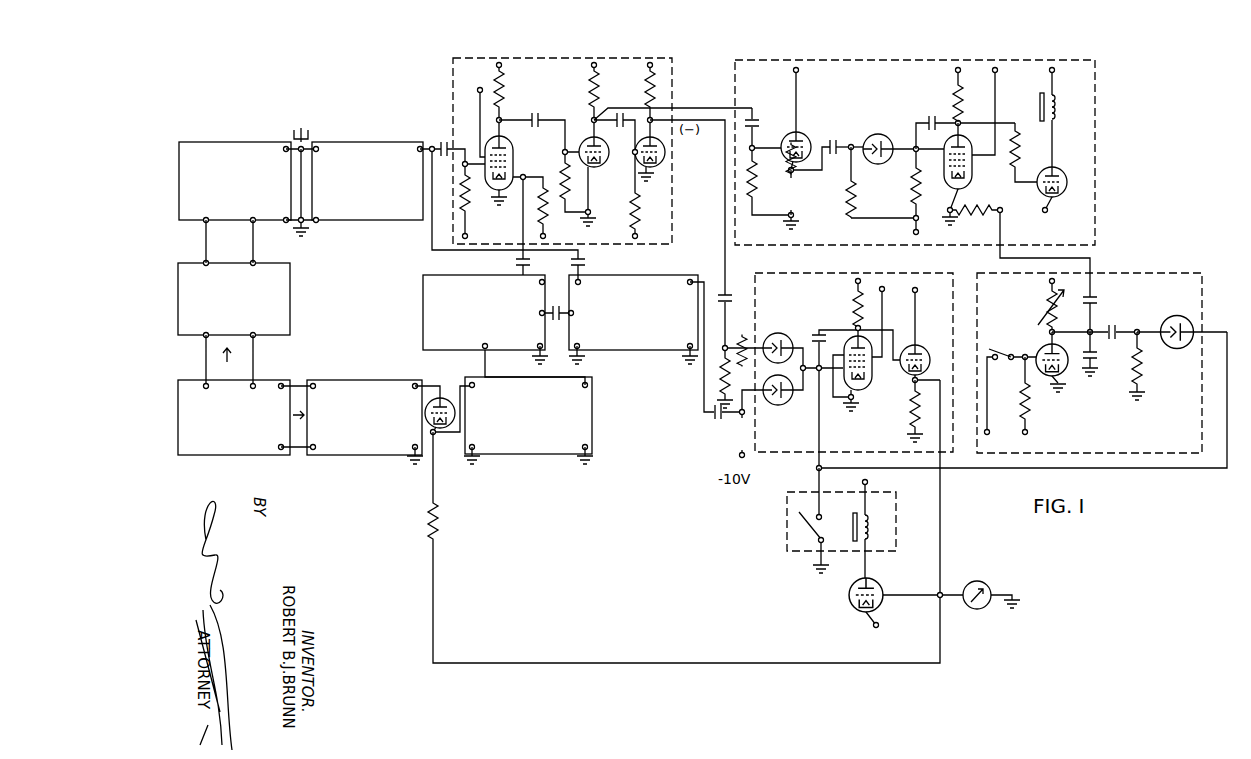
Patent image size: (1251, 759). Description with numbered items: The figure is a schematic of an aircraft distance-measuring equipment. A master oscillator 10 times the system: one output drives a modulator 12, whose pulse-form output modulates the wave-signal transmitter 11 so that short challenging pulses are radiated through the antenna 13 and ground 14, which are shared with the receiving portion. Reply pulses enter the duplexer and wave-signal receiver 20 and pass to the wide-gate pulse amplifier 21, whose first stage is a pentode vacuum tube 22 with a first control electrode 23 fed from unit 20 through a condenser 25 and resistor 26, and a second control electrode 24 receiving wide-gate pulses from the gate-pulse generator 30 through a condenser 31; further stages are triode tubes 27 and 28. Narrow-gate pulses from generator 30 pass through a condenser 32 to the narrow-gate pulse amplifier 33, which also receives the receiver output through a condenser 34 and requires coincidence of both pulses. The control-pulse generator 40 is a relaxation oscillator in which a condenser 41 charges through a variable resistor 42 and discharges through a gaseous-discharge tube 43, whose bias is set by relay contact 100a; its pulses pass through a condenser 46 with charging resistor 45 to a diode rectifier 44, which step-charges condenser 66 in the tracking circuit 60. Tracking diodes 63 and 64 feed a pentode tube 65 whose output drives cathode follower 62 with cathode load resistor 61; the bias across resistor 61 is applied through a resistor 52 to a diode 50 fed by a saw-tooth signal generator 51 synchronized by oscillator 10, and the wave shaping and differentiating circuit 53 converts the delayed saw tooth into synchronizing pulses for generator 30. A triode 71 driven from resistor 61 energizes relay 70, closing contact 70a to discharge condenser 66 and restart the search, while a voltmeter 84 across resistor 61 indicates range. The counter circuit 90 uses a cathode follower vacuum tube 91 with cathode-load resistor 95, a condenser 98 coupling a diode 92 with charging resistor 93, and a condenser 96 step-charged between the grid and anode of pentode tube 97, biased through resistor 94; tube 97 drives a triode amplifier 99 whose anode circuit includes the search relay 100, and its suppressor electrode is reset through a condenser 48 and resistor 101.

The master oscillator 10 is at (282, 380).
The wave-signal transmitter 11 is at (244, 124).
The modulator 12 is at (262, 263).
The antenna 13 is at (301, 126).
The ground 14 is at (312, 228).
The duplexer and wave-signal receiver 20 is at (384, 142).
The wide-gate pulse amplifier 21 is at (452, 80).
The vacuum tube 22 is at (509, 143).
The first control electrode 23 is at (492, 184).
The second control electrode 24 is at (514, 152).
The condenser 25 is at (442, 138).
The resistor 26 is at (470, 214).
The triode tube 27 is at (580, 138).
The triode tube 28 is at (647, 174).
The gate-pulse generator 30 is at (423, 311).
The condenser 31 is at (513, 259).
The condenser 32 is at (552, 300).
The narrow-gate pulse amplifier 33 is at (644, 350).
The condenser 34 is at (587, 260).
The control-pulse generator 40 is at (1166, 274).
The condenser 41 is at (1102, 364).
The resistor 42 is at (1042, 294).
The gaseous-discharge tube 43 is at (1038, 344).
The diode rectifier 44 is at (1189, 312).
The charging resistor 45 is at (1138, 374).
The condenser 46 is at (1111, 328).
The condenser 48 is at (1095, 302).
The diode 50 is at (449, 387).
The saw-tooth signal generator 51 is at (380, 360).
The resistor 52 is at (445, 524).
The wave shaping and differentiating circuit 53 is at (586, 416).
The tracking circuit 60 is at (769, 268).
The cathode load resistor 61 is at (907, 420).
The cathode follower 62 is at (934, 349).
The diode 63 is at (791, 332).
The diode 64 is at (770, 410).
The pentode tube 65 is at (870, 372).
The condenser 66 is at (810, 337).
The relay 70 is at (868, 532).
The relay contact 70a is at (841, 520).
The triode 71 is at (885, 588).
The voltmeter 84 is at (969, 613).
The counter circuit 90 is at (724, 94).
The vacuum tube 91 is at (783, 134).
The diode 92 is at (888, 134).
The charging resistor 93 is at (853, 196).
The resistor 94 is at (908, 190).
The cathode-load resistor 95 is at (790, 190).
The condenser 96 is at (936, 119).
The pentode tube 97 is at (972, 186).
The condenser 98 is at (833, 140).
The triode amplifier 99 is at (1065, 181).
The search relay 100 is at (1048, 114).
The relay contact 100a is at (999, 350).
The resistor 101 is at (971, 216).